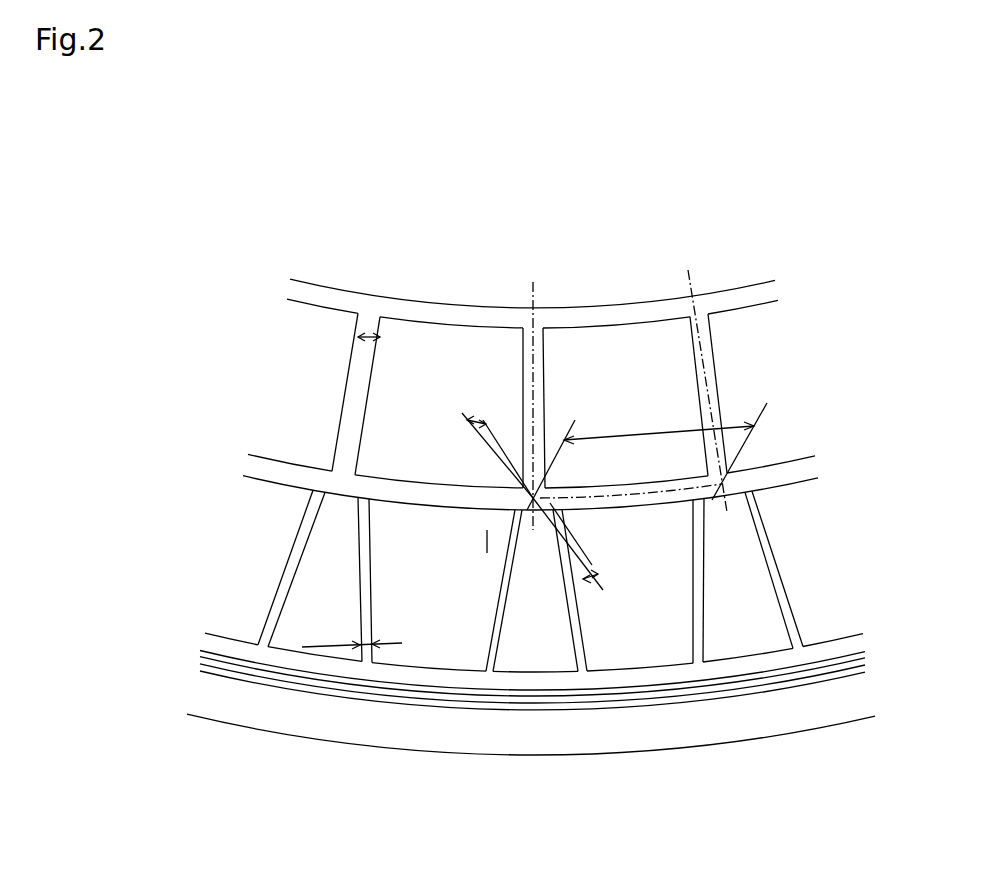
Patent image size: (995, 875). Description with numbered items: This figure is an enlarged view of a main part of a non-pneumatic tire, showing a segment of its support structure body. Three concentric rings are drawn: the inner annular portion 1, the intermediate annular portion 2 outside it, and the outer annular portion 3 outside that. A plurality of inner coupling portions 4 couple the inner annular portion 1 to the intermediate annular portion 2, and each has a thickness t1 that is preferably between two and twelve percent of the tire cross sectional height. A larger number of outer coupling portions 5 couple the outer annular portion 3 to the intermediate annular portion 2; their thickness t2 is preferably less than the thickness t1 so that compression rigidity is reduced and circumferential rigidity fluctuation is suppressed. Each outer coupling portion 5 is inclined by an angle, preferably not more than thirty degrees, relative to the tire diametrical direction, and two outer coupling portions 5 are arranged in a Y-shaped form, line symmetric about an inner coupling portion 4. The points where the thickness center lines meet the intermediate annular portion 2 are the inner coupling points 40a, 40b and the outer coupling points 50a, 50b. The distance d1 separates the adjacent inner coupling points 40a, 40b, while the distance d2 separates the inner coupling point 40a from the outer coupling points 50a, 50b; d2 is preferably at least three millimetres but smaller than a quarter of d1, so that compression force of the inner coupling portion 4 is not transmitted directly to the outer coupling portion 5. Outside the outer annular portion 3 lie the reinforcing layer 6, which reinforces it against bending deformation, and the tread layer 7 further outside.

The inner annular portion 1 is at (413, 298).
The intermediate annular portion 2 is at (292, 466).
The outer annular portion 3 is at (238, 637).
The inner coupling portion 4 is at (345, 395).
The outer coupling portion 5 is at (283, 573).
The reinforcing layer 6 is at (537, 712).
The tread layer 7 is at (592, 757).
The inner coupling point 40a is at (533, 508).
The inner coupling point 40b is at (727, 492).
The outer coupling point 50a is at (515, 504).
The outer coupling point 50b is at (553, 505).
The thickness of the inner coupling portion t1 is at (366, 335).
The thickness of the outer coupling portion t2 is at (352, 580).
The distance between inner coupling points d1 is at (647, 456).
The distance between inner and outer coupling points d2 is at (535, 501).